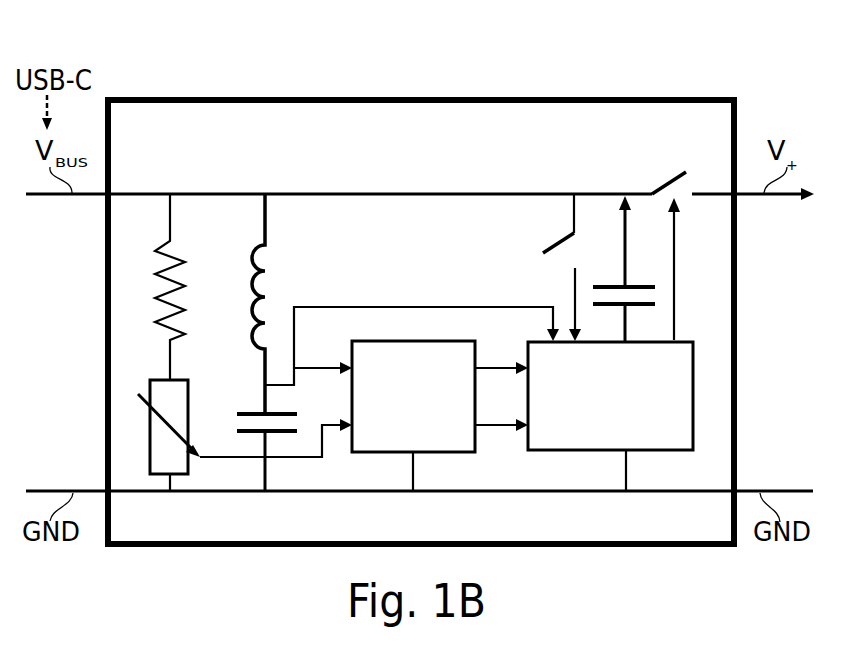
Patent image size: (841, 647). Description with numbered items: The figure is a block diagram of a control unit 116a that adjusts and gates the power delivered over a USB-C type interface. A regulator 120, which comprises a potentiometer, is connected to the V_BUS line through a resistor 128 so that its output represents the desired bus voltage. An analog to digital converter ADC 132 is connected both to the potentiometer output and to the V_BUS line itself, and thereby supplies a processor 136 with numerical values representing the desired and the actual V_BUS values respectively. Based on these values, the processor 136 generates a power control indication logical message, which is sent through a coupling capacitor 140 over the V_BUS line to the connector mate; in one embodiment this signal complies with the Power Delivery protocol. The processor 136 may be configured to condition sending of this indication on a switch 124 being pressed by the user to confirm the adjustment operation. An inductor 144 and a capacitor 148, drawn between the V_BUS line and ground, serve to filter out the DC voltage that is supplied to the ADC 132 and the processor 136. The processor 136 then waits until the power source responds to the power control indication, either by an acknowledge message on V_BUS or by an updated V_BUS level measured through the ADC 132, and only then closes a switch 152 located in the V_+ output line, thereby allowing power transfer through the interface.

The control unit 116a is at (233, 97).
The resistor 128 is at (175, 262).
The regulator 120 is at (188, 385).
The inductor 144 is at (266, 272).
The capacitor 148 is at (237, 431).
The Analog to Digital Converter (ADC) 132 is at (370, 341).
The processor 136 is at (548, 341).
The switch 124 is at (545, 252).
The coupling capacitor 140 is at (617, 287).
The switch 152 is at (664, 187).